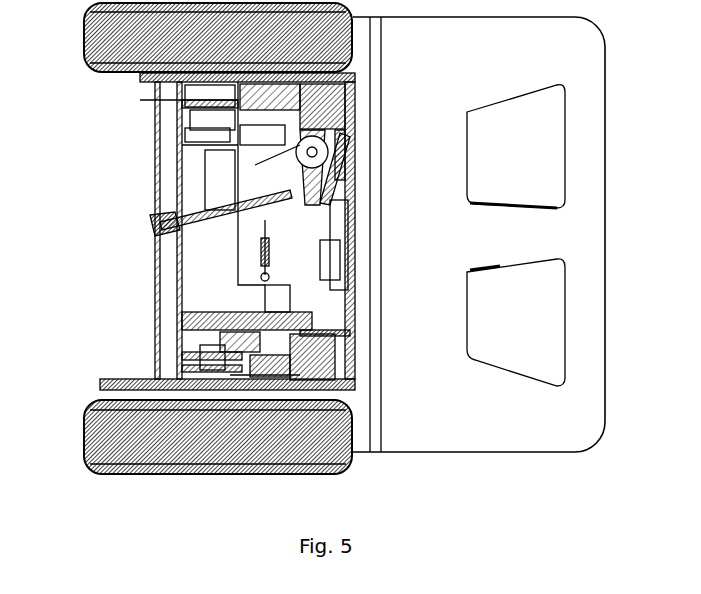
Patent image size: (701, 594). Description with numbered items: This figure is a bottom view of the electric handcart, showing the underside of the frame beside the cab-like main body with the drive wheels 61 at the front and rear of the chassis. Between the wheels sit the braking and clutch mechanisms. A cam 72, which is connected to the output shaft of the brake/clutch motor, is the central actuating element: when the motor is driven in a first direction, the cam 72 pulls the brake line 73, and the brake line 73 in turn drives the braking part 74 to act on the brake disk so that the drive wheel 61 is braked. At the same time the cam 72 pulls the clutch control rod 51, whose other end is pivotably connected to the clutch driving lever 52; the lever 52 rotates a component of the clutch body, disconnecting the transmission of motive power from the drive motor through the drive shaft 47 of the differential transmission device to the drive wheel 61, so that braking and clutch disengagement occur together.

The drive wheel 61 is at (100, 62).
The braking part 74 is at (215, 109).
The drive shaft 47 is at (222, 132).
The cam 72 is at (255, 170).
The clutch control rod 51 is at (250, 196).
The clutch driving lever 52 is at (165, 226).
The brake line 73 is at (300, 236).